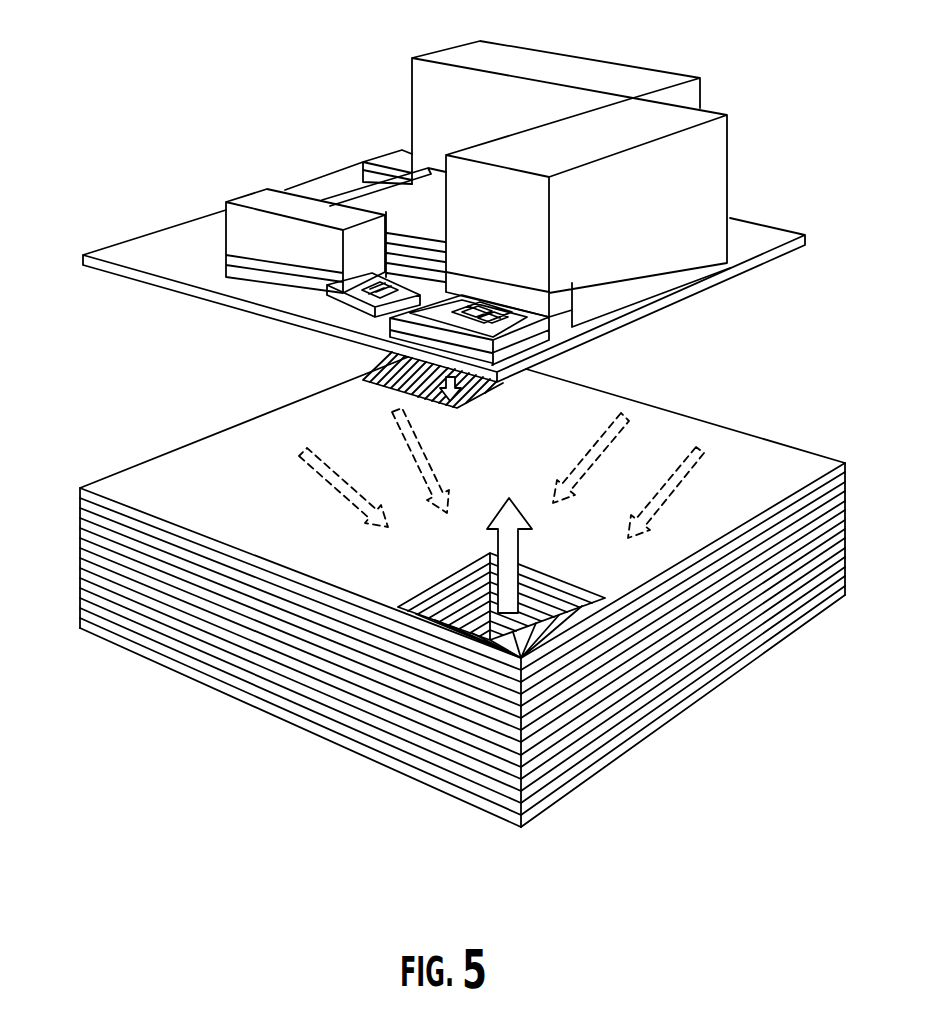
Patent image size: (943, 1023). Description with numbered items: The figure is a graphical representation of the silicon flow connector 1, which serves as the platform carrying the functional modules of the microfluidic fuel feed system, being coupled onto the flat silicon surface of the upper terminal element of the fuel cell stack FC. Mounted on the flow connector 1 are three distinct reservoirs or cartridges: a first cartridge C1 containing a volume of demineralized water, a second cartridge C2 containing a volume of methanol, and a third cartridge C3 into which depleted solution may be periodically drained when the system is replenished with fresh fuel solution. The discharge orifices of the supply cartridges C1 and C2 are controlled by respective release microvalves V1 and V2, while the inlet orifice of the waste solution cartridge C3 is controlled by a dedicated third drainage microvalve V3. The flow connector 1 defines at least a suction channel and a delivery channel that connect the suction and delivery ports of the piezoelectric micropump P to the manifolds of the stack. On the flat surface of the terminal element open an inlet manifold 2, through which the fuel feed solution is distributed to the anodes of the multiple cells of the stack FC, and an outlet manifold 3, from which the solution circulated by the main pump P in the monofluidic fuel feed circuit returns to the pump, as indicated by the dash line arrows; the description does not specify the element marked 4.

The flow connector 1 is at (444, 296).
The inlet manifold 2 is at (442, 592).
The outlet manifold 3 is at (415, 391).
The outlet notch 4 is at (501, 578).
The first cartridge C1 is at (617, 177).
The second cartridge C2 is at (241, 223).
The third cartridge C3 is at (556, 93).
The release microvalve V1 is at (561, 332).
The release microvalve V2 is at (356, 324).
The drainage microvalve V3 is at (348, 122).
The piezoelectric micropump P is at (430, 224).
The fuel cell stack FC is at (442, 592).